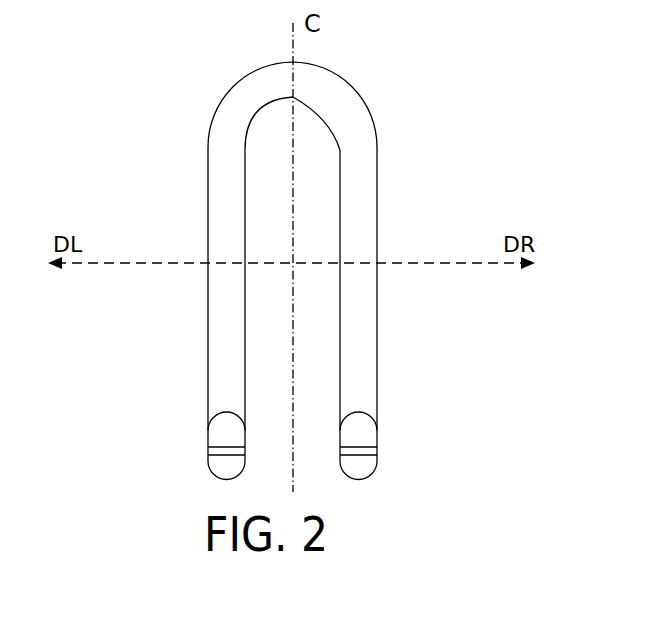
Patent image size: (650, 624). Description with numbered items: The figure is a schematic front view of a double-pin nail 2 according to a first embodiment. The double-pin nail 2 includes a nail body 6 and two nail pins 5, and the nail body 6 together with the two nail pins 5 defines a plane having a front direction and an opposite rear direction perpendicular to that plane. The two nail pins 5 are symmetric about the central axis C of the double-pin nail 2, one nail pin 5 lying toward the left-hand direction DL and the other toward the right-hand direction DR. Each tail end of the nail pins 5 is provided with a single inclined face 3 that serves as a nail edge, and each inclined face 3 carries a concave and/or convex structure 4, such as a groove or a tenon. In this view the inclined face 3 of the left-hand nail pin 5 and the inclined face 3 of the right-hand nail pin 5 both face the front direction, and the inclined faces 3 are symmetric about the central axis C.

The double-pin nail 2 is at (286, 270).
The inclined face 3 is at (228, 435).
The concave and/or convex structure 4 is at (362, 453).
The nail pin 5 is at (230, 380).
The nail body 6 is at (253, 112).